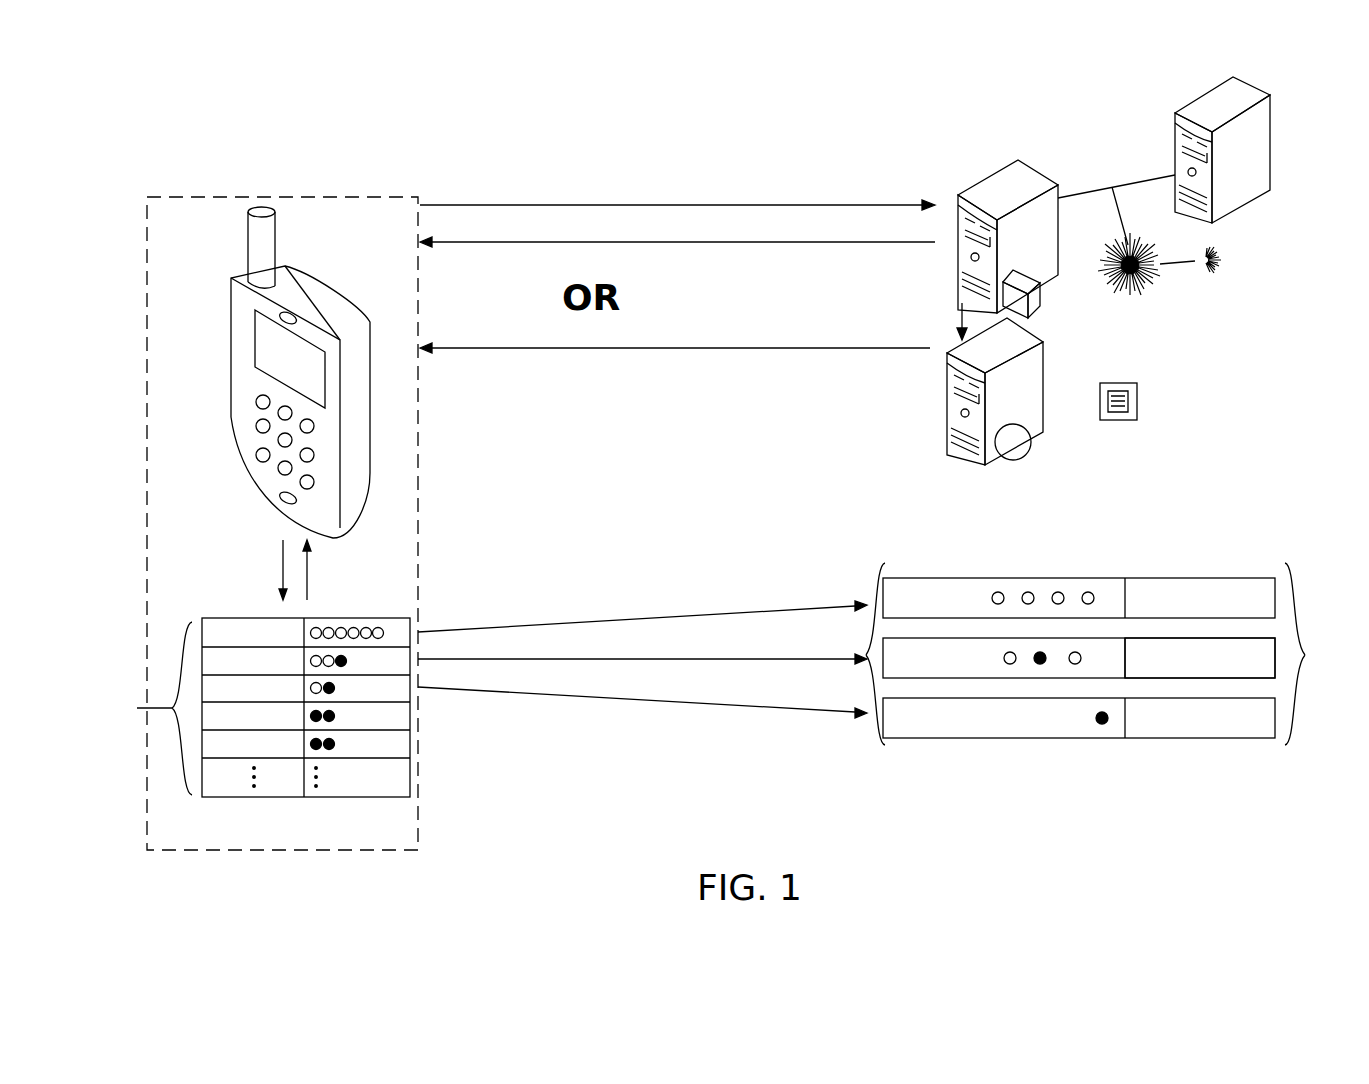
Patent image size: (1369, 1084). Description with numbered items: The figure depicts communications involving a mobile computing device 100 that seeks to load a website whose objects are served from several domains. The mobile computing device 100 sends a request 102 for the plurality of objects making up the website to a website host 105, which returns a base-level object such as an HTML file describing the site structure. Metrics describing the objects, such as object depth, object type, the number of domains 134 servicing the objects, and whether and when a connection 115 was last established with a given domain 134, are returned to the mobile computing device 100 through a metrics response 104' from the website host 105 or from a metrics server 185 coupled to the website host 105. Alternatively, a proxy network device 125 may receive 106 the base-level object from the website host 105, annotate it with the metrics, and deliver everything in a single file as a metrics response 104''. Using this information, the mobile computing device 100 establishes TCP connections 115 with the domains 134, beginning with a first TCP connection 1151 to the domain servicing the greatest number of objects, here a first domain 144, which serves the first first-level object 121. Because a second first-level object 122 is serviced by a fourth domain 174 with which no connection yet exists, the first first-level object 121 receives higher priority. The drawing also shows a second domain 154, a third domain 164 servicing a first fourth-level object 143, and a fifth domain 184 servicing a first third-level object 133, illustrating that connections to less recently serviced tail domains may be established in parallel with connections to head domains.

The mobile computing device 100 is at (316, 300).
The request 102 is at (663, 205).
The metrics response 104' is at (677, 269).
The metrics response 104'' is at (675, 377).
The website host 105 is at (1040, 167).
The receive 106 is at (960, 310).
The TCP connection 115 is at (1058, 689).
The first TCP connection 1151 is at (648, 617).
The first first-level object 121 is at (439, 671).
The second first-level object 122 is at (332, 716).
The proxy network device 125 is at (1043, 370).
The first third-level object 133 is at (332, 744).
The domain 134 is at (721, 679).
The first fourth-level object 143 is at (332, 688).
The Domain1 144 is at (657, 656).
The Domain2 154 is at (1255, 672).
The Domain3 164 is at (1225, 738).
The Domain4 174 is at (200, 728).
The Domain5 184 is at (657, 697).
The metrics server 185 is at (1260, 147).